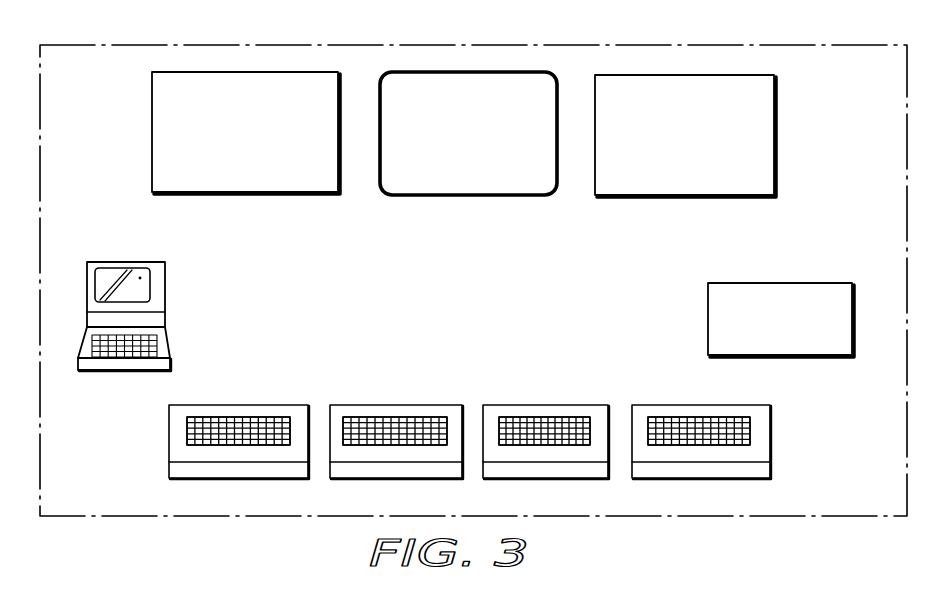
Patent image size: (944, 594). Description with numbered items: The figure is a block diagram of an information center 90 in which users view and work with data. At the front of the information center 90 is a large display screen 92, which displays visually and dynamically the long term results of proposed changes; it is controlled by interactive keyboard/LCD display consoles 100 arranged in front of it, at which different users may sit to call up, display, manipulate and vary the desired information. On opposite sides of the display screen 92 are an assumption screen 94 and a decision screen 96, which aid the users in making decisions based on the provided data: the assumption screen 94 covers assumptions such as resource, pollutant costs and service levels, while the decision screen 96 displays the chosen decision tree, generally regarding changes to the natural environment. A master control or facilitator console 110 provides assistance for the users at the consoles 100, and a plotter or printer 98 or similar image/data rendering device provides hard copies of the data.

The information center 90 is at (861, 27).
The display screen 92 is at (518, 57).
The assumption screen 94 is at (272, 71).
The decision screen 96 is at (736, 57).
The printer 98 is at (815, 258).
The consoles 100 is at (356, 378).
The facilitator console 110 is at (165, 288).